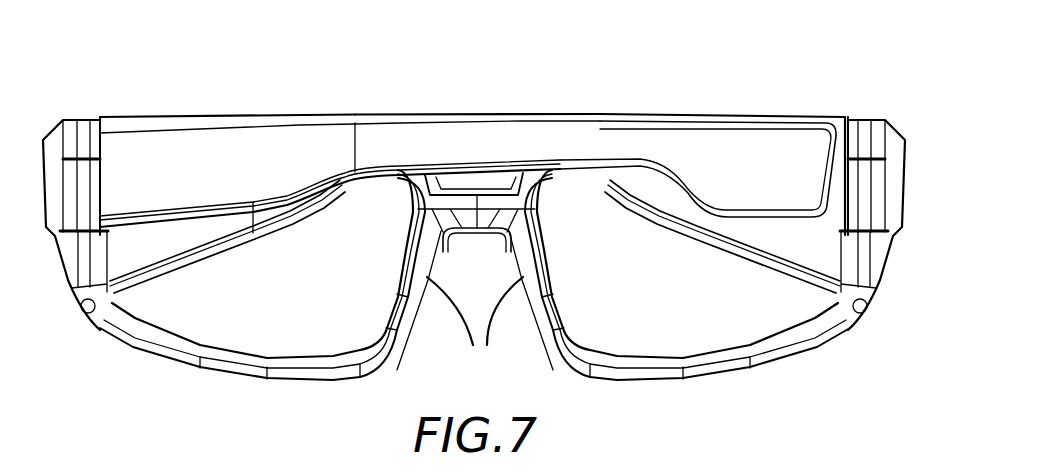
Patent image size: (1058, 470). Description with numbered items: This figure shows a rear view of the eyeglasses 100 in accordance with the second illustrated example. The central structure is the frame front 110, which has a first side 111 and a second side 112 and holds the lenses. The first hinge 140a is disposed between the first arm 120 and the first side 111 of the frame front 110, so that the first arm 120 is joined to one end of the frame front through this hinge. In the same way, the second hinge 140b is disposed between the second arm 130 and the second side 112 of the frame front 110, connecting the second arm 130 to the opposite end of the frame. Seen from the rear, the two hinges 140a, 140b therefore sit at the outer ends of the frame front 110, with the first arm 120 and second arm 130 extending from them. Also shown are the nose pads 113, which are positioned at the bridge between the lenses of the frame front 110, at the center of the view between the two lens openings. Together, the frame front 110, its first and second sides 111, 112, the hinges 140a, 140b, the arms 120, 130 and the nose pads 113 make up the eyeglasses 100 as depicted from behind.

The eyeglasses 100 is at (525, 90).
The frame front 110 is at (257, 378).
The first side of frame front 111 is at (117, 117).
The second side of frame front 112 is at (842, 117).
The nose pads 113 is at (475, 294).
The first arm 120 is at (407, 143).
The second arm 130 is at (663, 230).
The first hinge 140a is at (80, 118).
The second hinge 140b is at (867, 290).